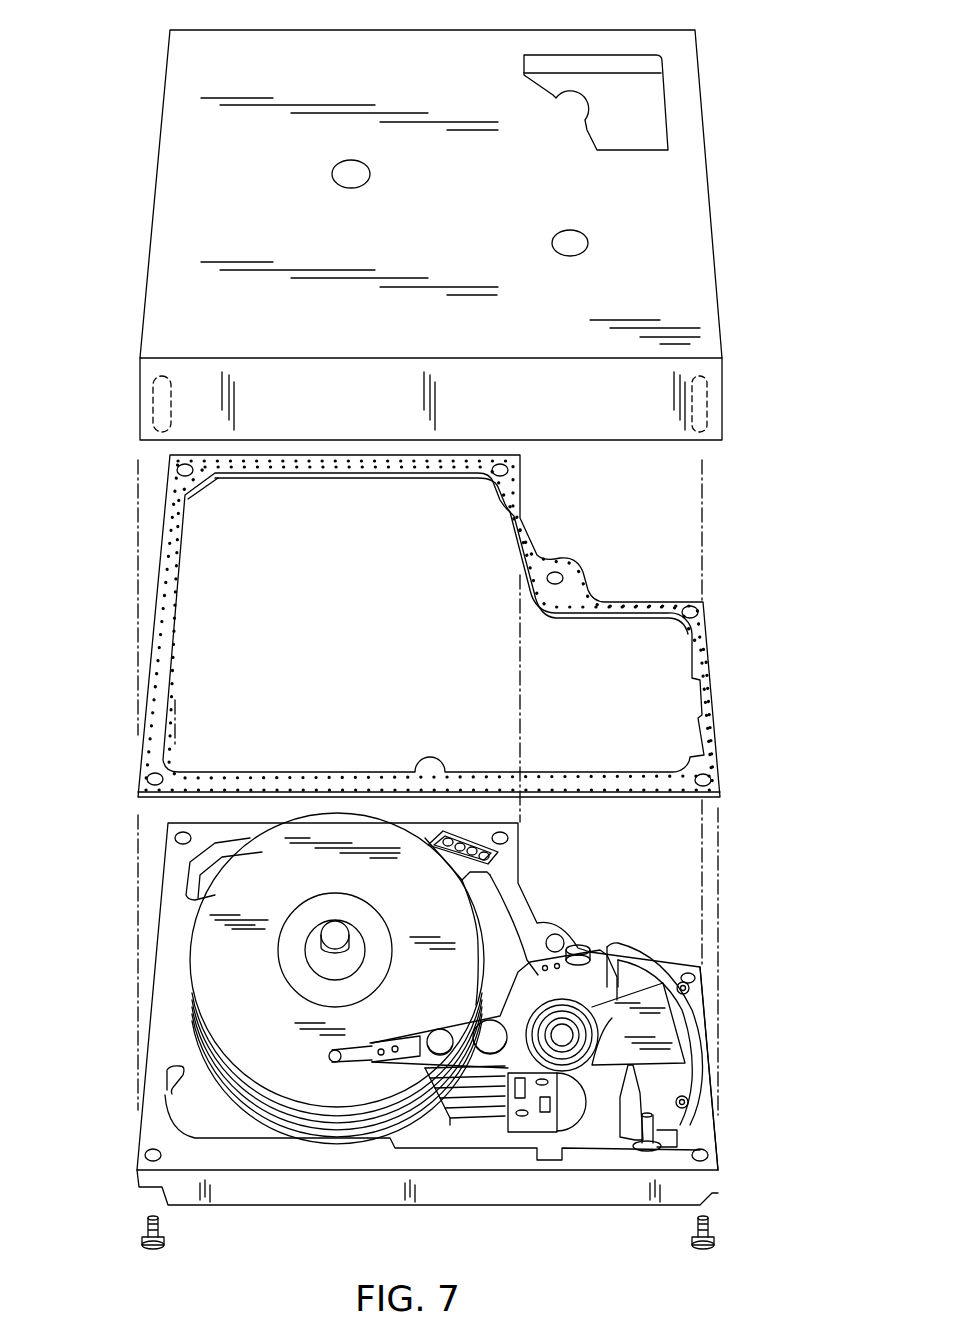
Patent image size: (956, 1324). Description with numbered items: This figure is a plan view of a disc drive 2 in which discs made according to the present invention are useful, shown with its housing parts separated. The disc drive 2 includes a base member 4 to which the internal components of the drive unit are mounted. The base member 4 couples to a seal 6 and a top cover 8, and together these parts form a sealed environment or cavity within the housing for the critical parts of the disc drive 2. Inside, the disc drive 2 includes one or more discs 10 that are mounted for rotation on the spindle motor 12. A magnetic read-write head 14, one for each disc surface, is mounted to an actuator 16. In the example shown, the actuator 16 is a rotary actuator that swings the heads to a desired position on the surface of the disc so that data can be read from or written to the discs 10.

The disc drive 2 is at (110, 70).
The base member 4 is at (712, 1063).
The seal 6 is at (702, 678).
The top cover 8 is at (710, 205).
The discs 10 is at (254, 1026).
The spindle motor 12 is at (313, 952).
The magnetic read-write head 14 is at (335, 1063).
The actuator 16 is at (722, 1015).